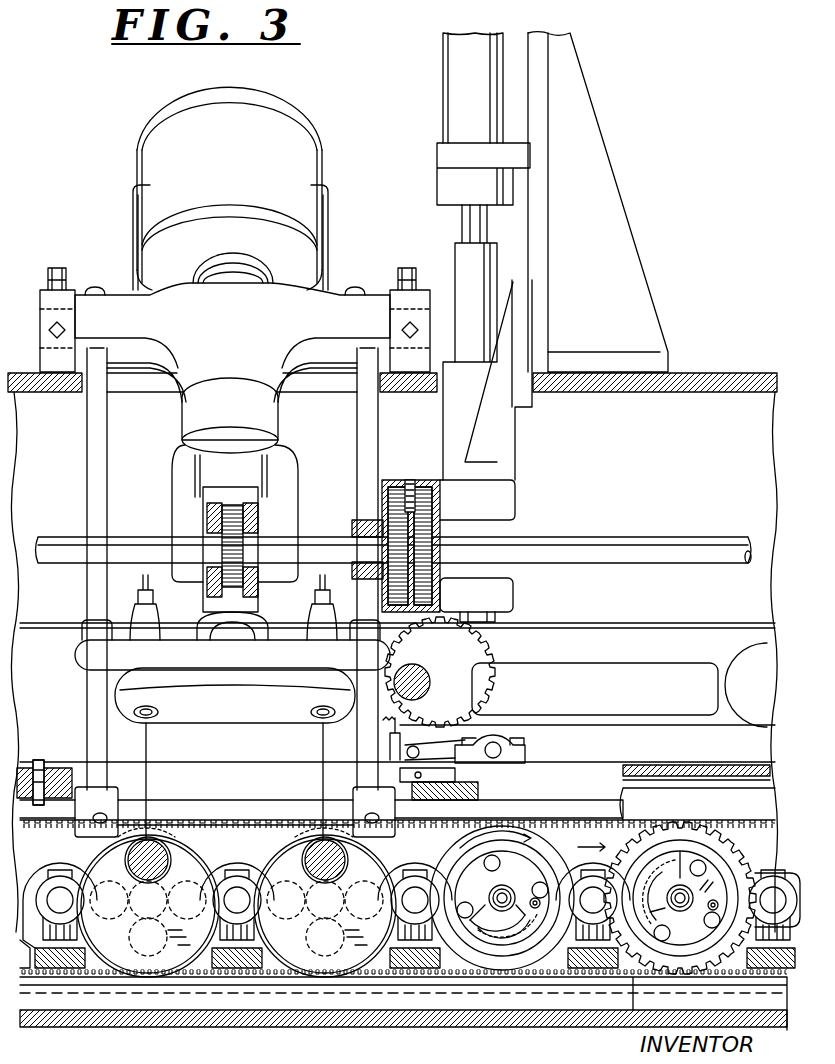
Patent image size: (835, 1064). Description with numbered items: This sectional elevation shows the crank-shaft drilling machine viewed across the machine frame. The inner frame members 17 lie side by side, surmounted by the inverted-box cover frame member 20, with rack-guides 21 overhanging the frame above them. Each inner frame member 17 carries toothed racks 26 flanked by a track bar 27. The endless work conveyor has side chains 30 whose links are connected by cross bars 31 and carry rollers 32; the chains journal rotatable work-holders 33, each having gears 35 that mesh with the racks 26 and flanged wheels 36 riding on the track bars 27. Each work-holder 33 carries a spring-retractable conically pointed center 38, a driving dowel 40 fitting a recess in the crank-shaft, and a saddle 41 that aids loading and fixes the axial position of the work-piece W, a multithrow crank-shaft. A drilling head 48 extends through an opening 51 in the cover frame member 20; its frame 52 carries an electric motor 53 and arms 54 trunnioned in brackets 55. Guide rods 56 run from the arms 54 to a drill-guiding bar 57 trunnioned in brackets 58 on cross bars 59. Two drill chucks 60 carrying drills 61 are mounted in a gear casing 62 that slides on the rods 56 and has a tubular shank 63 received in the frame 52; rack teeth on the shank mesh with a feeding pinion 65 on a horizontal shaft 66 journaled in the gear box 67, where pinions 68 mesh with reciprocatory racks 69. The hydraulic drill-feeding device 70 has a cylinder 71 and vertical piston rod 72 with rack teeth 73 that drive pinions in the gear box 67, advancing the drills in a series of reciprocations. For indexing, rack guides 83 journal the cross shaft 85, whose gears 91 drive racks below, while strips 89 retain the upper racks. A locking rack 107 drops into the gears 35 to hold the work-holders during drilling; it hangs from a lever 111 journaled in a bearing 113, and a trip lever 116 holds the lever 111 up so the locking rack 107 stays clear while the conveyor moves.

The inner frame member 17 is at (400, 1027).
The cover frame member 20 is at (720, 373).
The rack-guide 21 is at (677, 735).
The toothed rack 26 is at (615, 1040).
The track bar 27 is at (320, 1000).
The side chain 30 is at (60, 873).
The cross bar 31 is at (62, 968).
The roller 32 is at (432, 870).
The work-holder 33 is at (150, 978).
The gear 35 is at (676, 828).
The flanged wheel 36 is at (517, 941).
The conically pointed center 38 is at (490, 894).
The driving dowel 40 is at (533, 898).
The saddle 41 is at (515, 945).
The drilling head 48 is at (82, 152).
The opening 51 is at (133, 385).
The drilling head frame 52 is at (330, 283).
The electric motor 53 is at (290, 108).
The arm 54 is at (120, 295).
The bracket 55 is at (40, 298).
The guide rod 56 is at (87, 465).
The drill-guiding bar 57 is at (230, 800).
The bracket 58 is at (52, 768).
The cross bar 59 is at (478, 792).
The drill chuck 60 is at (152, 715).
The drill 61 is at (148, 780).
The gear casing 62 is at (240, 715).
The tubular shank 63 is at (215, 620).
The feeding pinion 65 is at (222, 512).
The horizontal shaft 66 is at (328, 535).
The gear box 67 is at (515, 505).
The pinion 68 is at (417, 524).
The reciprocatory rack 69 is at (418, 480).
The drill-feeding device 70 is at (440, 157).
The hydraulic cylinder 71 is at (455, 84).
The piston rod 72 is at (470, 218).
The rack teeth 73 is at (478, 612).
The rack guide 83 is at (703, 638).
The cross shaft 85 is at (430, 682).
The strip 89 is at (634, 623).
The gear 91 is at (448, 658).
The locking rack 107 is at (397, 804).
The lever 111 is at (465, 745).
The bearing 113 is at (525, 745).
The trip lever 116 is at (403, 740).
The work-piece W is at (172, 955).